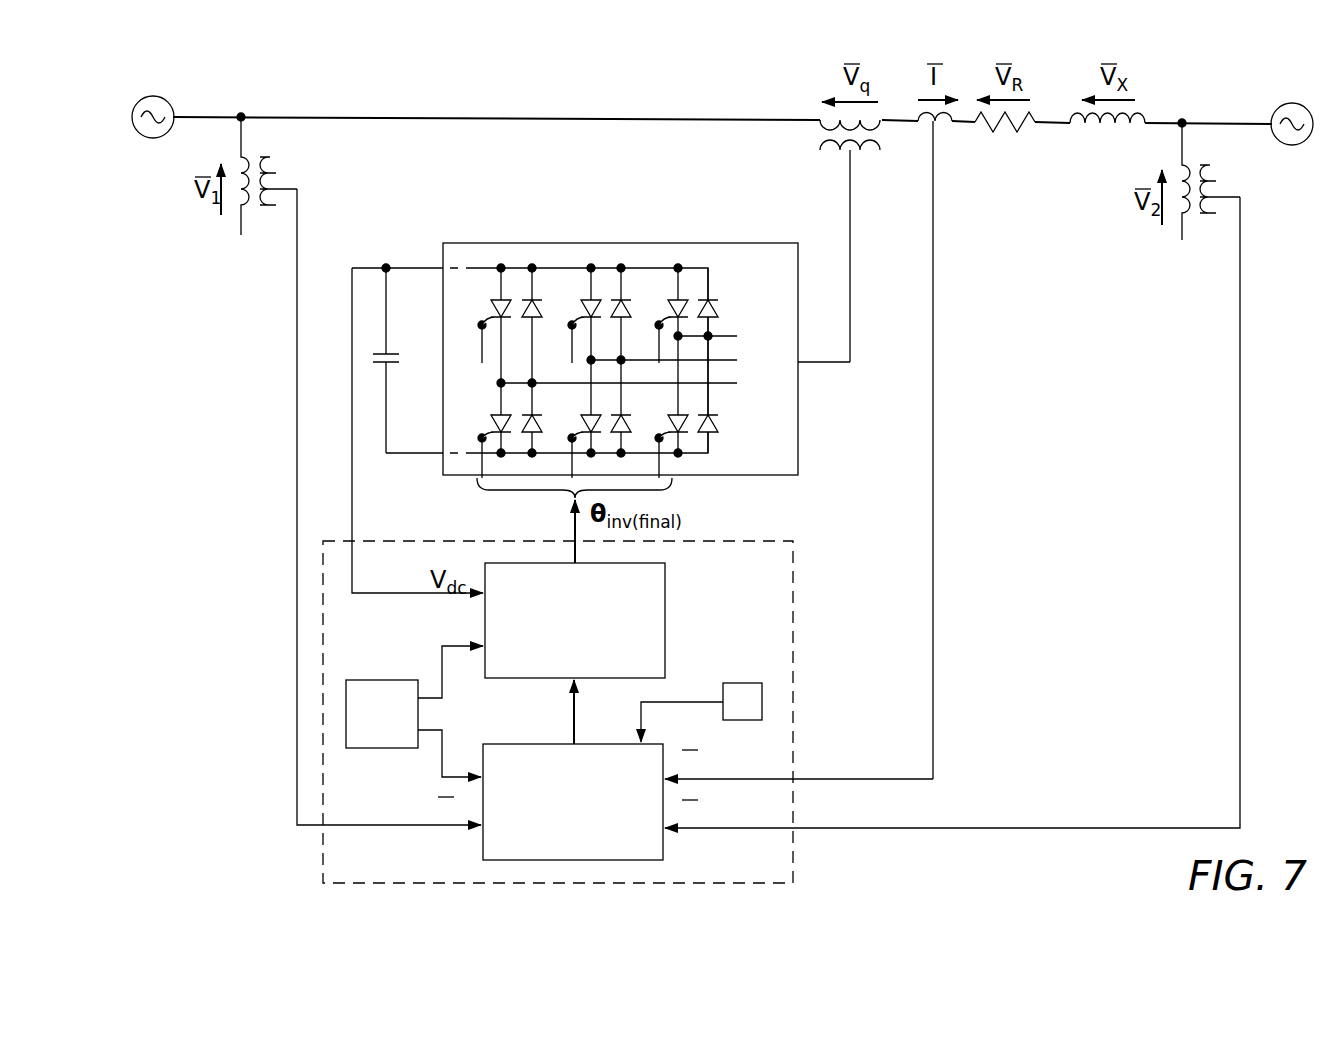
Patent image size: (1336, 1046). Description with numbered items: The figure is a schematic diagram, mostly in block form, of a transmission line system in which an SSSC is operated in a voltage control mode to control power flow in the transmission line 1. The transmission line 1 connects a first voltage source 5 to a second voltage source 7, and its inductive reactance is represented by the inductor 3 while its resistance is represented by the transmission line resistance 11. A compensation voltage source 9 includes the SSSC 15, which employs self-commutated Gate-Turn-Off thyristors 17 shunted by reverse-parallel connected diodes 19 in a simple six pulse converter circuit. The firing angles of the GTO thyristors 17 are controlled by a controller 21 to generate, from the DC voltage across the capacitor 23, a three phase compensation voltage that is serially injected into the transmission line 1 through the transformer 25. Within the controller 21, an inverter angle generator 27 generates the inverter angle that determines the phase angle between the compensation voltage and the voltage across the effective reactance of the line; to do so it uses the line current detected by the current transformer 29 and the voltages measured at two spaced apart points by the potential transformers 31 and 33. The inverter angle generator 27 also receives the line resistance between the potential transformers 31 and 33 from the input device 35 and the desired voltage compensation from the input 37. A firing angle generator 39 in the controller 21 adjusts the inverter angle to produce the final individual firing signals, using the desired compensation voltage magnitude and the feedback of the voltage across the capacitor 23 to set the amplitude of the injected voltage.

The transmission line 1 is at (720, 112).
The inductor 3 is at (1082, 133).
The first voltage source 5 is at (172, 82).
The second voltage source 7 is at (1310, 96).
The compensation voltage source 9 is at (852, 502).
The transmission line resistance 11 is at (1013, 128).
The SSSC 15 is at (620, 345).
The GTO thyristors 17 is at (492, 306).
The diodes 19 is at (538, 312).
The controller 21 is at (793, 612).
The capacitor 23 is at (384, 352).
The transformer 25 is at (830, 152).
The inverter angle generator 27 is at (663, 855).
The current transformer 29 is at (950, 125).
The potential transformer 31 is at (268, 157).
The potential transformer 33 is at (1205, 214).
The input device 35 is at (742, 683).
The input 37 is at (360, 680).
The firing angle generator 39 is at (665, 604).